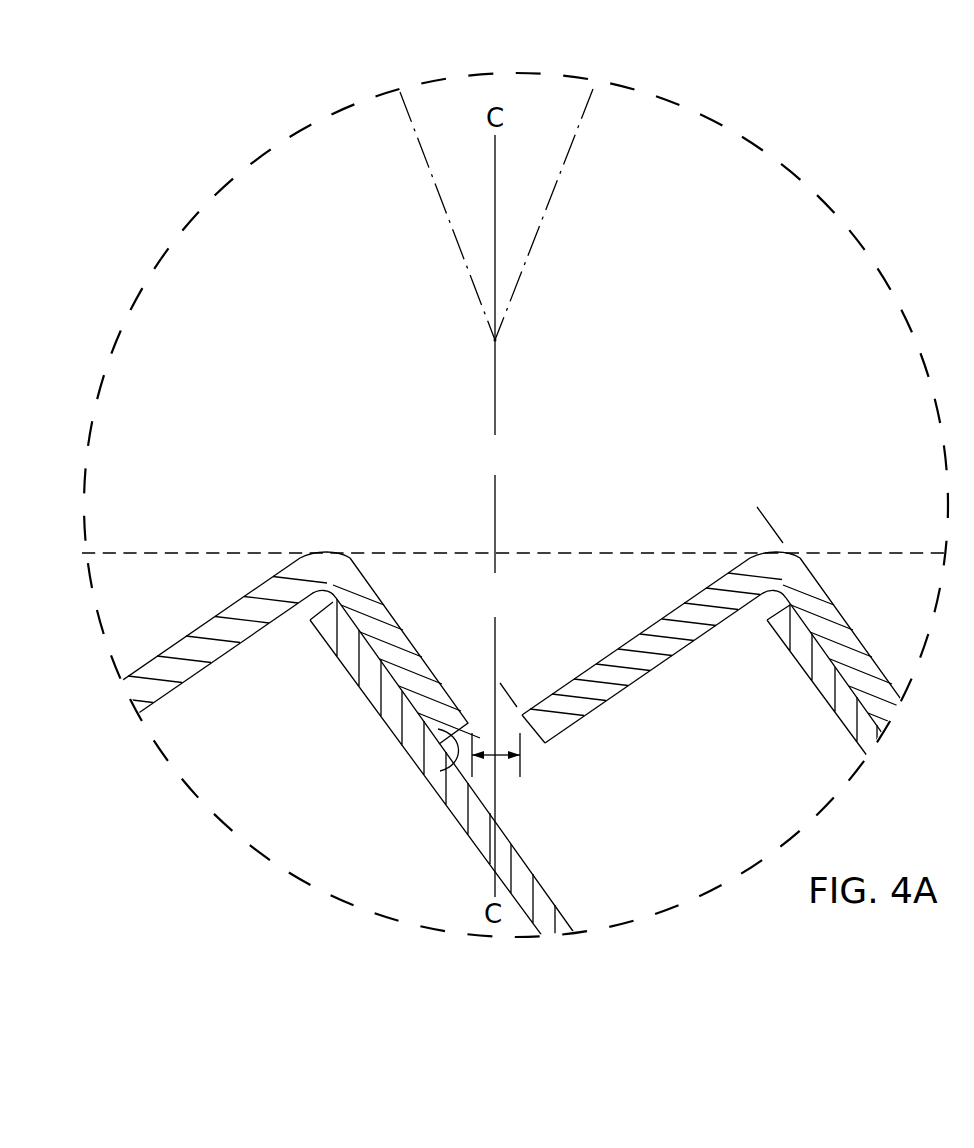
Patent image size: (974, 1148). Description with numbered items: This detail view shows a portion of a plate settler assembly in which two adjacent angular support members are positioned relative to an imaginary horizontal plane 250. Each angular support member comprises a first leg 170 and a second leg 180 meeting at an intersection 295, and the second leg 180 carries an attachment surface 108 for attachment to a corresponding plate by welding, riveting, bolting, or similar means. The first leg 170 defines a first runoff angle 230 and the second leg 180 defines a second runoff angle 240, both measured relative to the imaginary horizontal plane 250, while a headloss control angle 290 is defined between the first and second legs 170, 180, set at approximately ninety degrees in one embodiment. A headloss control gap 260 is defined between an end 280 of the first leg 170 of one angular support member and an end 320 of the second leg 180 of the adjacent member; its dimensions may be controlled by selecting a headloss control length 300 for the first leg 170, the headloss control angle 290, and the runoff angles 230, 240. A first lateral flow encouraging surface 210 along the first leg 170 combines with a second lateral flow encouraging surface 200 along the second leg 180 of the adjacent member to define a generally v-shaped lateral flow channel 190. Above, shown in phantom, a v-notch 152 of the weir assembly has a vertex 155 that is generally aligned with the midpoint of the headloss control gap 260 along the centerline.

The attachment surface 108 is at (376, 658).
The v-notch 152 is at (568, 157).
The vertex 155 is at (495, 338).
The first leg 170 is at (212, 628).
The second leg 180 is at (383, 640).
The generally v-shaped lateral flow channel 190 is at (536, 535).
The second lateral flow encouraging surface 200 is at (370, 582).
The first lateral flow encouraging surface 210 is at (160, 653).
The first runoff angle 230 is at (463, 555).
The second runoff angle 240 is at (921, 558).
The imaginary horizontal plane 250 is at (113, 553).
The headloss control gap 260 is at (498, 757).
The end of first leg 280 is at (524, 723).
The headloss control angle 290 is at (853, 702).
The intersection 295 is at (318, 580).
The headloss control length 300 is at (758, 525).
The end of second leg 320 is at (457, 755).